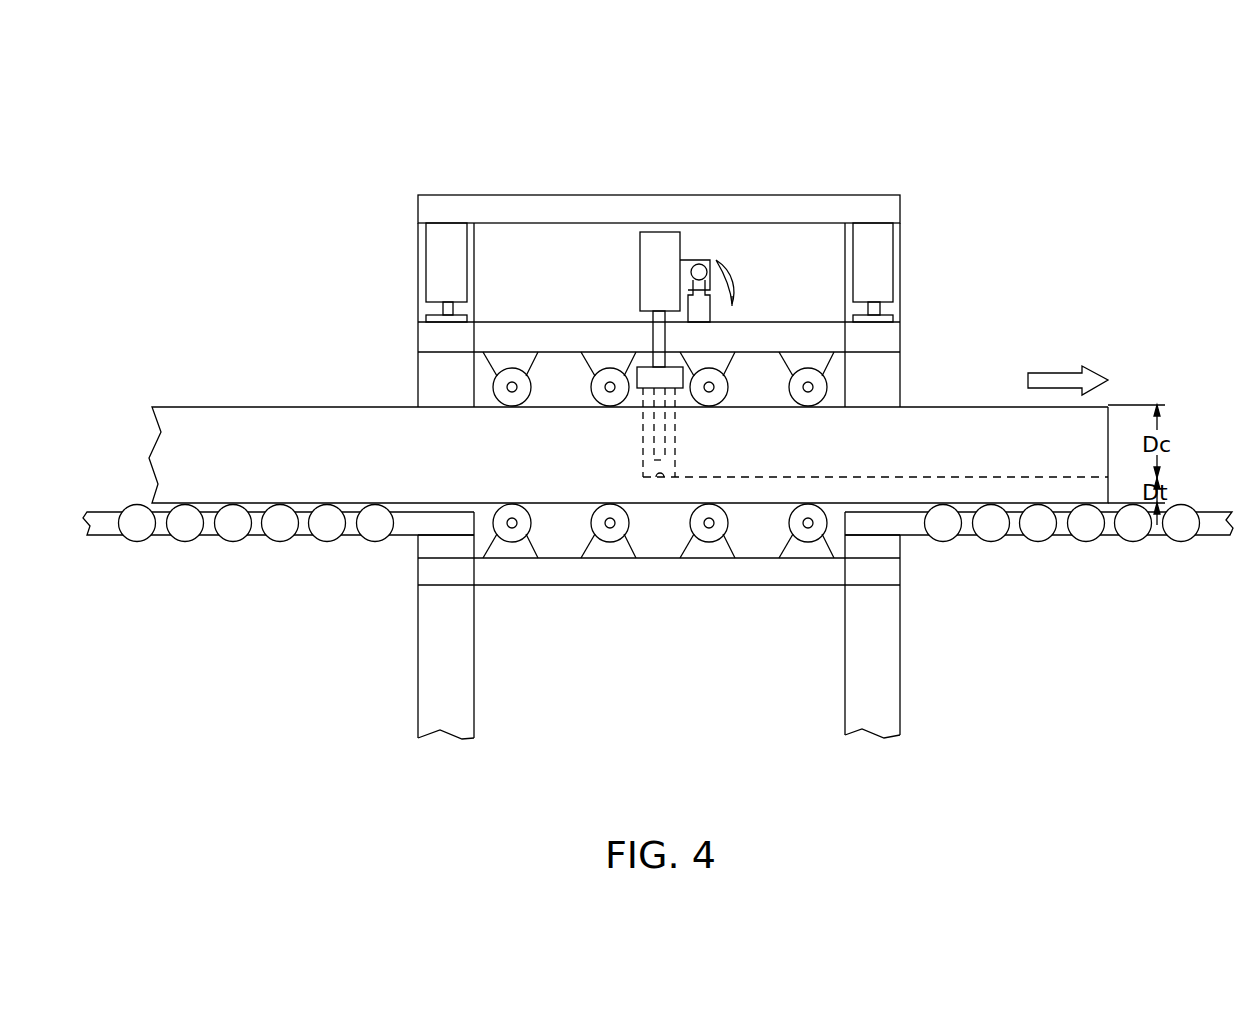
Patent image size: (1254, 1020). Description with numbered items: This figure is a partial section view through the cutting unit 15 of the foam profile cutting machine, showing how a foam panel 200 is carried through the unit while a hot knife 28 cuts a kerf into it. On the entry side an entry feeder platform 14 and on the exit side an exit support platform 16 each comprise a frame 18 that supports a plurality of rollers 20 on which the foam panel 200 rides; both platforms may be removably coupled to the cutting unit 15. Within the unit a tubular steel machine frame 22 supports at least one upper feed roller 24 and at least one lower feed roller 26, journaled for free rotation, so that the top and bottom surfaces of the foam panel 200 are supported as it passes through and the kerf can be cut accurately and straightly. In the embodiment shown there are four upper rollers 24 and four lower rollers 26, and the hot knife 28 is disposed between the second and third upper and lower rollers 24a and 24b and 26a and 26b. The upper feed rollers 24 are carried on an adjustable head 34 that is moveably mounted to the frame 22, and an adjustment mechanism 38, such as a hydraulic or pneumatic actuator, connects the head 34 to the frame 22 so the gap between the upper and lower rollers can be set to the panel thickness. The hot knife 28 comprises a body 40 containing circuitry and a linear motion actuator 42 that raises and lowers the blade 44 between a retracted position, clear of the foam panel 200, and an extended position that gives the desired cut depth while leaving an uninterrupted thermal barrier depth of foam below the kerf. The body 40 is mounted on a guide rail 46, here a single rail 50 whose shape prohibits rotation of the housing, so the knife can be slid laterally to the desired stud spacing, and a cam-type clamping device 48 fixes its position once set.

The entry feeder platform 14 is at (103, 507).
The cutting unit 15 is at (840, 138).
The exit support platform 16 is at (1210, 506).
The frame 18 is at (162, 530).
The rollers 20 is at (188, 533).
The machine frame 22 is at (513, 195).
The upper feed roller 24 is at (512, 406).
The second upper roller 24a is at (610, 406).
The third upper roller 24b is at (715, 398).
The lower feed roller 26 is at (512, 503).
The second lower roller 26a is at (610, 503).
The third lower roller 26b is at (709, 556).
The hot knife 28 is at (647, 268).
The adjustable head 34 is at (810, 332).
The adjustment mechanism 38 is at (436, 272).
The body 40 is at (700, 256).
The linear motion actuator 42 is at (662, 326).
The blade 44 is at (680, 440).
The guide rail 46 is at (712, 306).
The clamping device 48 is at (735, 282).
The single rail 50 is at (706, 270).
The foam panel 200 is at (214, 425).